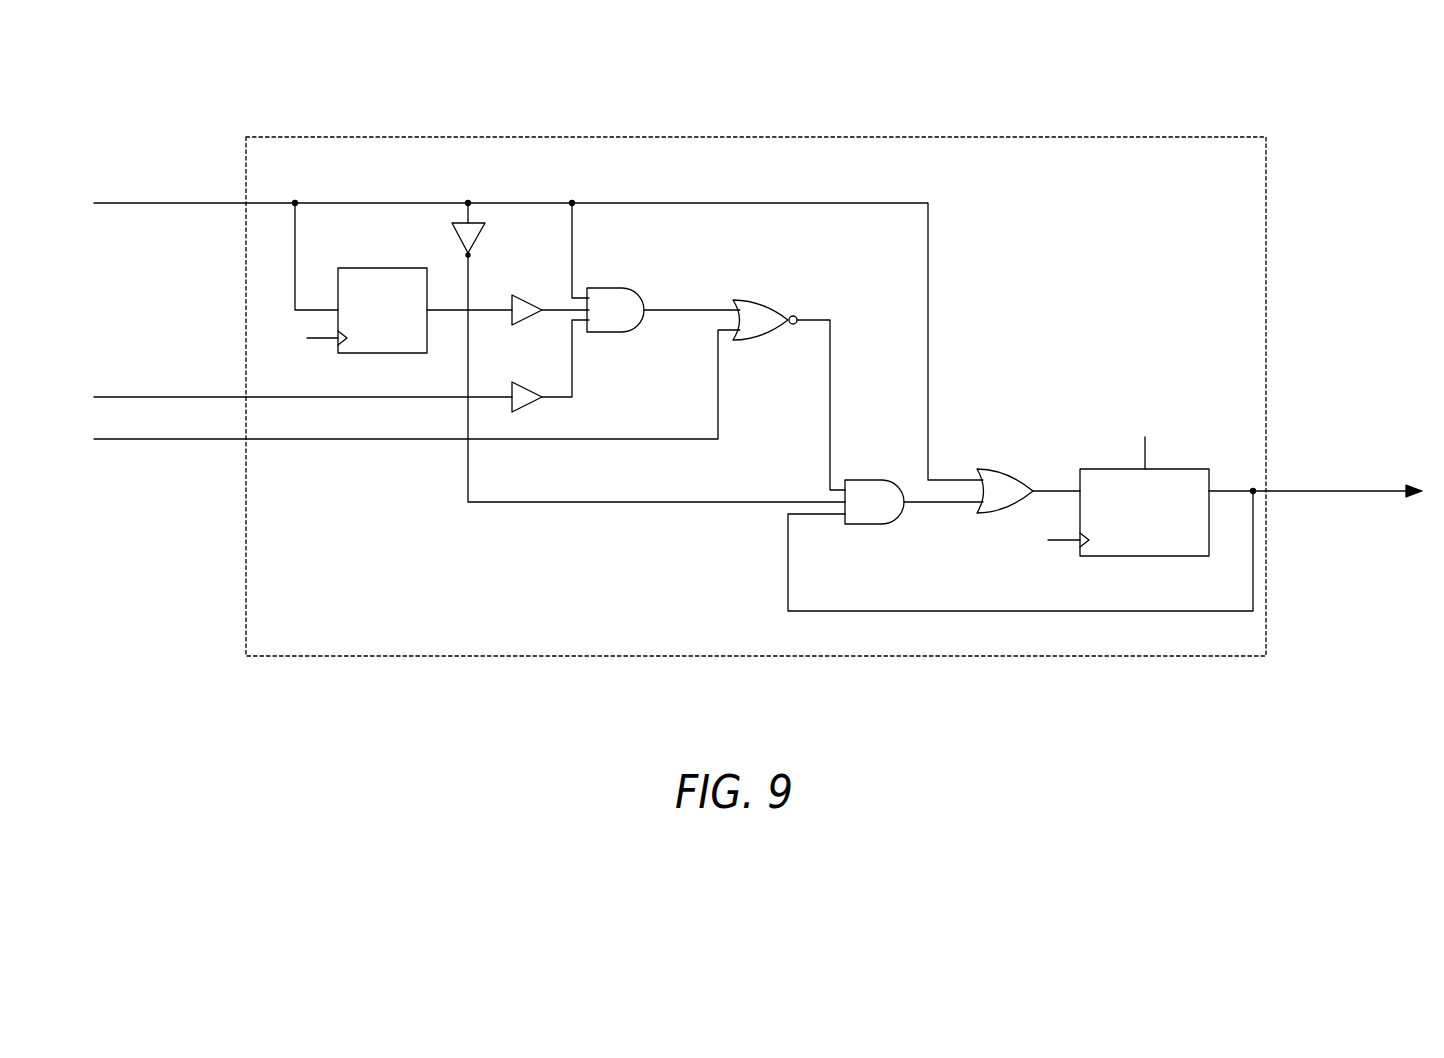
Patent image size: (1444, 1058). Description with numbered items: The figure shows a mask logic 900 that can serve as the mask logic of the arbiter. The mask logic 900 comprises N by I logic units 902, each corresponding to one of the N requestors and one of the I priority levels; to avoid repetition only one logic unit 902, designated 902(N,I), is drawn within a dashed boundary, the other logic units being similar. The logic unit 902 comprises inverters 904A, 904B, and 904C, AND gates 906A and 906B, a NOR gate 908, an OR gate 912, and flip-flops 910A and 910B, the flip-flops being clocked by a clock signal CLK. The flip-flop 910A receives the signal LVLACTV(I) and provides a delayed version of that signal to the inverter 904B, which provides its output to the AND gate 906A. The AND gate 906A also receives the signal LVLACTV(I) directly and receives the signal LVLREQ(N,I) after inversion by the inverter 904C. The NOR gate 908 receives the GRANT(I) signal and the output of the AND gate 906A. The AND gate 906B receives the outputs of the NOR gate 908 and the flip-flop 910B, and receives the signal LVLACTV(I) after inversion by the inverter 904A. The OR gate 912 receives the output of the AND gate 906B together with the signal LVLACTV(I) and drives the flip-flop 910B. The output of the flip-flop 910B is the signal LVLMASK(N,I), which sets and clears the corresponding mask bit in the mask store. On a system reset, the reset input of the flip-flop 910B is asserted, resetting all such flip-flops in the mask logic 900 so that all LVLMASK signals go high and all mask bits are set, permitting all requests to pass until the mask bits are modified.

The mask logic 900 is at (1029, 70).
The logic unit 902 is at (602, 137).
The inverter 904A is at (479, 232).
The inverter 904B is at (510, 319).
The inverter 904C is at (539, 403).
The AND gate 906A is at (605, 333).
The AND gate 906B is at (863, 525).
The NOR gate 908 is at (757, 300).
The flip-flop 910A is at (411, 268).
The flip-flop 910B is at (1176, 556).
The OR gate 912 is at (1000, 470).